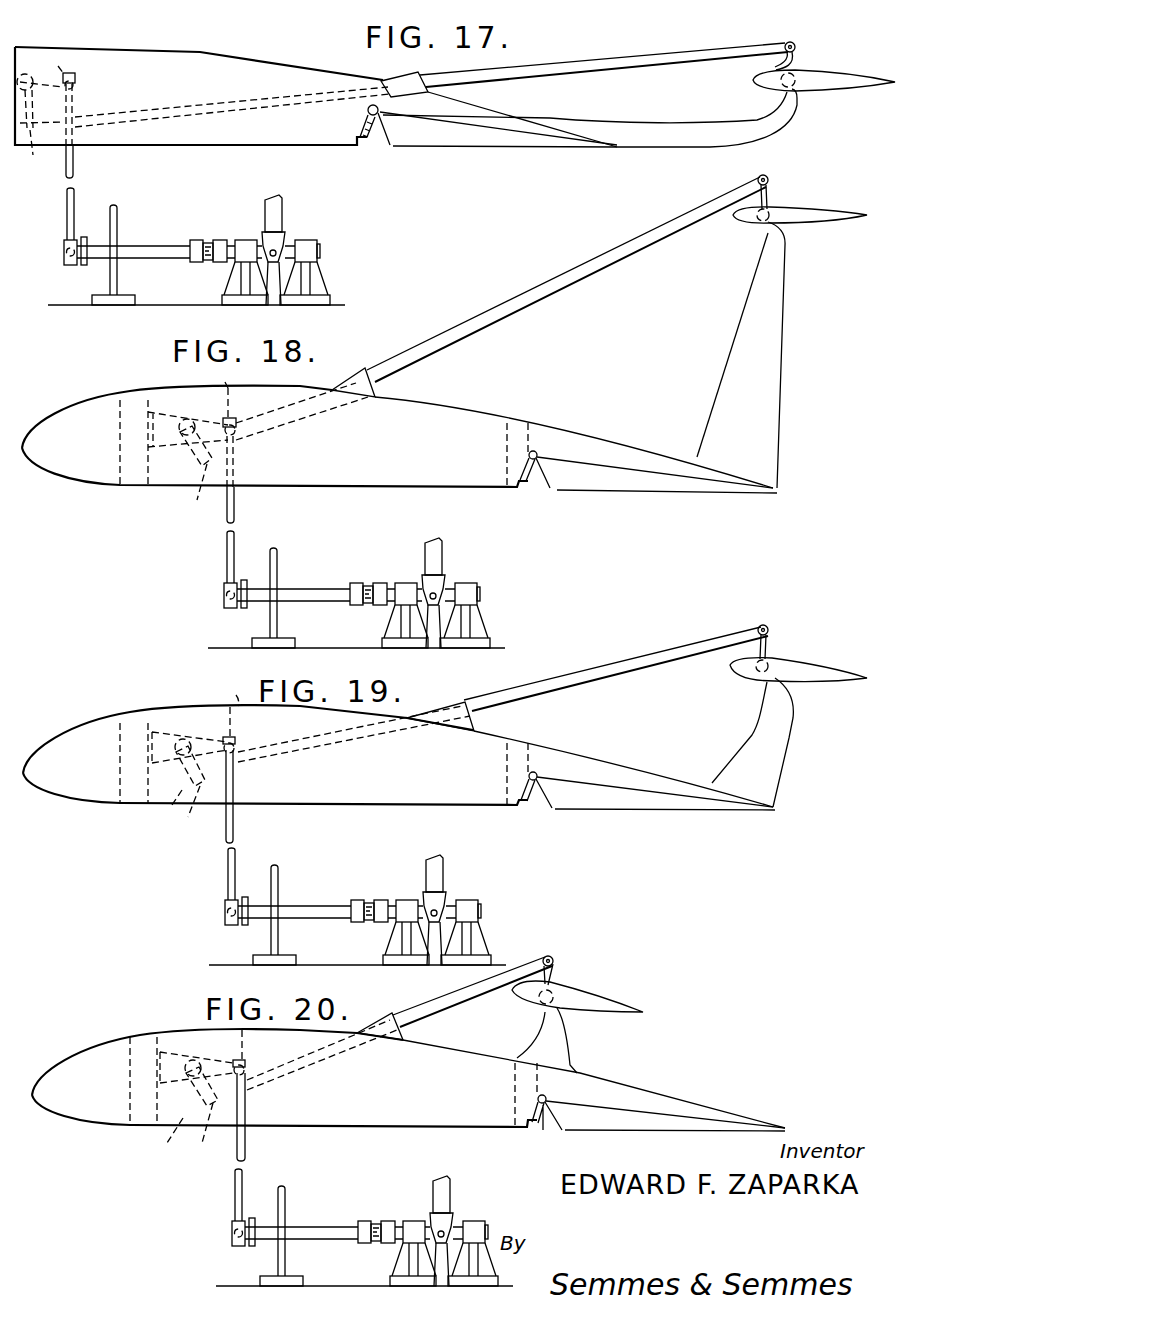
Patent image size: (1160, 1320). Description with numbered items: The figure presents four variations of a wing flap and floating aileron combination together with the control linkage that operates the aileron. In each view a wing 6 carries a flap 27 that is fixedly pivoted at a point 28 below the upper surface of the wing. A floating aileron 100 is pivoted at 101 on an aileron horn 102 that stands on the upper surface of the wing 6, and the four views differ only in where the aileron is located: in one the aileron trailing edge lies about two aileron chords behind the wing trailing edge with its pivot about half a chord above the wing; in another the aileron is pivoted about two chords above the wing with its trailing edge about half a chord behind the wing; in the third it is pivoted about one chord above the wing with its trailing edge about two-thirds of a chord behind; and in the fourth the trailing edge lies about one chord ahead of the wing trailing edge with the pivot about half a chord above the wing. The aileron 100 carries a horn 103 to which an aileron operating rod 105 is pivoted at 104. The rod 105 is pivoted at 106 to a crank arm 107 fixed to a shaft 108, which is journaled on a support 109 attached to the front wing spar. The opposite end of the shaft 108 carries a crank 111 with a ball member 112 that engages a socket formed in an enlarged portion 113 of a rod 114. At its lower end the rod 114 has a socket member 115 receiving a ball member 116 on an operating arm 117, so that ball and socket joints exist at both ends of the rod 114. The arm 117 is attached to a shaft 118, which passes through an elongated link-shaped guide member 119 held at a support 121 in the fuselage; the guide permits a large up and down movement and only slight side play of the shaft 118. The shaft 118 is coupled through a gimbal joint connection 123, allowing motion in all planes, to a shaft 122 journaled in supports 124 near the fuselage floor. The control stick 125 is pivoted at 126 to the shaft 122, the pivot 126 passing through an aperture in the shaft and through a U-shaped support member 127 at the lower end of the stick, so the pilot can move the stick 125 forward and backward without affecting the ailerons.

In FIG. 17, the wing 6 is at (150, 52).
In FIG. 18, the wing 6 is at (58, 415).
In FIG. 19, the wing 6 is at (70, 725).
In FIG. 20, the wing 6 is at (72, 1055).
In FIG. 17, the flap 27 is at (500, 148).
In FIG. 18, the flap 27 is at (657, 488).
In FIG. 19, the flap 27 is at (652, 812).
In FIG. 20, the flap 27 is at (632, 1138).
In FIG. 17, the pivot point 28 is at (375, 118).
In FIG. 18, the pivot point 28 is at (534, 490).
In FIG. 19, the pivot point 28 is at (533, 781).
In FIG. 20, the pivot point 28 is at (547, 1128).
In FIG. 17, the floating aileron 100 is at (851, 77).
In FIG. 18, the floating aileron 100 is at (838, 210).
In FIG. 19, the floating aileron 100 is at (838, 668).
In FIG. 20, the floating aileron 100 is at (614, 1006).
In FIG. 17, the pivot 101 is at (797, 75).
In FIG. 18, the pivot 101 is at (757, 222).
In FIG. 19, the pivot 101 is at (775, 662).
In FIG. 20, the pivot 101 is at (538, 1004).
In FIG. 17, the aileron horn 102 is at (700, 132).
In FIG. 18, the aileron horn 102 is at (780, 312).
In FIG. 19, the aileron horn 102 is at (790, 730).
In FIG. 20, the aileron horn 102 is at (560, 1040).
In FIG. 17, the horn 103 is at (774, 65).
In FIG. 18, the horn 103 is at (771, 200).
In FIG. 19, the horn 103 is at (750, 650).
In FIG. 20, the horn 103 is at (553, 977).
In FIG. 17, the pivot 104 is at (794, 43).
In FIG. 18, the pivot 104 is at (768, 176).
In FIG. 19, the pivot 104 is at (768, 627).
In FIG. 20, the pivot 104 is at (556, 957).
In FIG. 17, the aileron operating rod 105 is at (557, 68).
In FIG. 18, the aileron operating rod 105 is at (578, 268).
In FIG. 19, the aileron operating rod 105 is at (638, 665).
In FIG. 20, the aileron operating rod 105 is at (466, 993).
In FIG. 17, the pivot 106 is at (48, 149).
In FIG. 18, the pivot 106 is at (200, 492).
In FIG. 19, the pivot 106 is at (190, 812).
In FIG. 20, the pivot 106 is at (193, 1135).
In FIG. 17, the crank arm 107 is at (48, 108).
In FIG. 18, the crank arm 107 is at (186, 461).
In FIG. 19, the crank arm 107 is at (177, 792).
In FIG. 20, the crank arm 107 is at (185, 1115).
In FIG. 17, the shaft 108 is at (27, 73).
In FIG. 18, the shaft 108 is at (192, 420).
In FIG. 19, the shaft 108 is at (190, 739).
In FIG. 20, the shaft 108 is at (205, 1050).
In FIG. 18, the support 109 is at (170, 416).
In FIG. 19, the support 109 is at (160, 728).
In FIG. 20, the support 109 is at (172, 1048).
In FIG. 17, the crank 111 is at (65, 60).
In FIG. 18, the crank 111 is at (228, 391).
In FIG. 19, the crank 111 is at (225, 708).
In FIG. 20, the crank 111 is at (245, 1042).
In FIG. 17, the ball member 112 is at (75, 84).
In FIG. 18, the ball member 112 is at (240, 428).
In FIG. 19, the ball member 112 is at (236, 749).
In FIG. 20, the ball member 112 is at (246, 1070).
In FIG. 17, the enlarged portion 113 is at (77, 89).
In FIG. 18, the enlarged portion 113 is at (234, 418).
In FIG. 19, the enlarged portion 113 is at (237, 740).
In FIG. 20, the enlarged portion 113 is at (246, 1060).
In FIG. 17, the rod 114 is at (74, 166).
In FIG. 18, the rod 114 is at (235, 508).
In FIG. 19, the rod 114 is at (226, 864).
In FIG. 20, the rod 114 is at (246, 1150).
In FIG. 17, the socket member 115 is at (65, 246).
In FIG. 18, the socket member 115 is at (209, 560).
In FIG. 19, the socket member 115 is at (212, 893).
In FIG. 20, the socket member 115 is at (216, 1197).
In FIG. 17, the ball member 116 is at (63, 256).
In FIG. 18, the ball member 116 is at (211, 595).
In FIG. 19, the ball member 116 is at (213, 909).
In FIG. 20, the ball member 116 is at (217, 1233).
In FIG. 17, the operating arm 117 is at (84, 237).
In FIG. 18, the operating arm 117 is at (259, 577).
In FIG. 19, the operating arm 117 is at (260, 890).
In FIG. 20, the operating arm 117 is at (265, 1216).
In FIG. 17, the shaft 118 is at (155, 248).
In FIG. 18, the shaft 118 is at (346, 581).
In FIG. 19, the shaft 118 is at (347, 898).
In FIG. 20, the shaft 118 is at (354, 1219).
In FIG. 17, the guide member 119 is at (118, 216).
In FIG. 18, the guide member 119 is at (287, 590).
In FIG. 19, the guide member 119 is at (289, 906).
In FIG. 20, the guide member 119 is at (295, 1228).
In FIG. 17, the support 121 is at (92, 302).
In FIG. 18, the support 121 is at (356, 635).
In FIG. 19, the support 121 is at (357, 954).
In FIG. 20, the support 121 is at (364, 1275).
In FIG. 17, the shaft 122 is at (220, 240).
In FIG. 18, the shaft 122 is at (383, 573).
In FIG. 19, the shaft 122 is at (387, 892).
In FIG. 20, the shaft 122 is at (391, 1216).
In FIG. 17, the gimbal joint connection 123 is at (208, 243).
In FIG. 18, the gimbal joint connection 123 is at (366, 570).
In FIG. 19, the gimbal joint connection 123 is at (368, 897).
In FIG. 20, the gimbal joint connection 123 is at (375, 1208).
In FIG. 17, the support 124 is at (318, 243).
In FIG. 18, the support 124 is at (434, 607).
In FIG. 19, the support 124 is at (435, 922).
In FIG. 20, the support 124 is at (439, 1245).
In FIG. 17, the control stick 125 is at (283, 203).
In FIG. 18, the control stick 125 is at (459, 548).
In FIG. 19, the control stick 125 is at (458, 864).
In FIG. 20, the control stick 125 is at (467, 1187).
In FIG. 17, the pivot 126 is at (270, 266).
In FIG. 18, the pivot 126 is at (438, 625).
In FIG. 19, the pivot 126 is at (441, 943).
In FIG. 20, the pivot 126 is at (447, 1264).
In FIG. 17, the U-shaped support member 127 is at (284, 238).
In FIG. 18, the U-shaped support member 127 is at (458, 574).
In FIG. 19, the U-shaped support member 127 is at (459, 892).
In FIG. 20, the U-shaped support member 127 is at (466, 1214).